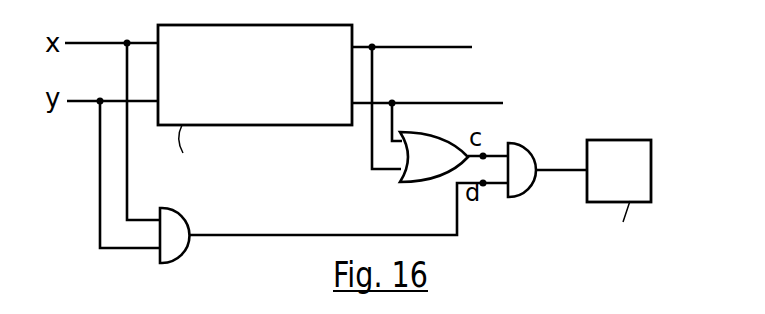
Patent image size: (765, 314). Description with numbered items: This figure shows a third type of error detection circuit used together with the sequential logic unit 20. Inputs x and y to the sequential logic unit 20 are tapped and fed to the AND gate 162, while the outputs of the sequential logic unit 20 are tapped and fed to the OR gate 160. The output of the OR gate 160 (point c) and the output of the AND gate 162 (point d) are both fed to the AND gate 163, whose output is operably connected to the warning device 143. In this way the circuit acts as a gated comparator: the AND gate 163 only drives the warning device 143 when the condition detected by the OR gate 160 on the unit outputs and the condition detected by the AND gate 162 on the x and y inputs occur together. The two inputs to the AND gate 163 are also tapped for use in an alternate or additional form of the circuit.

The sequential logic unit 20 is at (258, 83).
The OR gate 160 is at (441, 166).
The AND gate 162 is at (178, 250).
The AND gate 163 is at (524, 183).
The warning device 143 is at (635, 183).